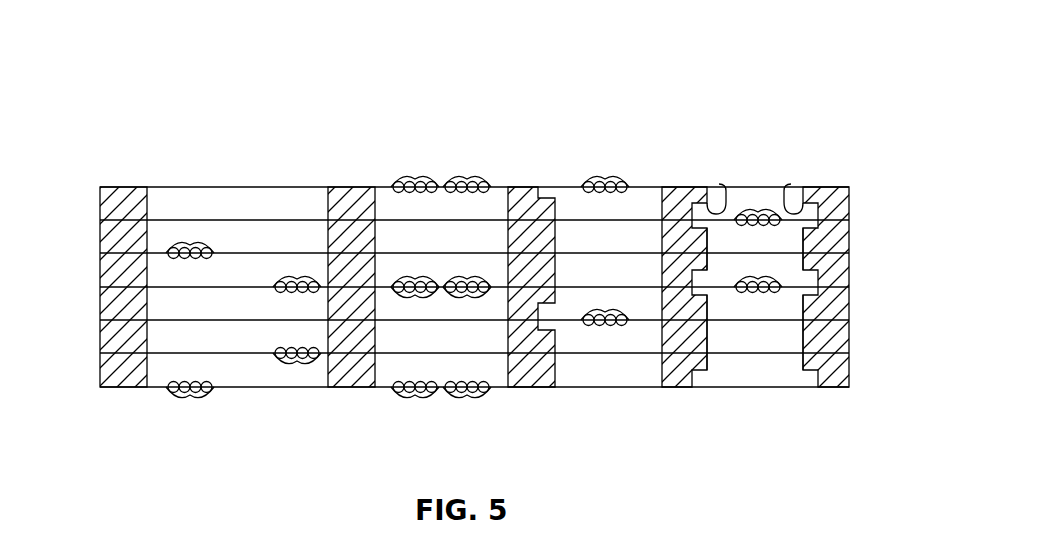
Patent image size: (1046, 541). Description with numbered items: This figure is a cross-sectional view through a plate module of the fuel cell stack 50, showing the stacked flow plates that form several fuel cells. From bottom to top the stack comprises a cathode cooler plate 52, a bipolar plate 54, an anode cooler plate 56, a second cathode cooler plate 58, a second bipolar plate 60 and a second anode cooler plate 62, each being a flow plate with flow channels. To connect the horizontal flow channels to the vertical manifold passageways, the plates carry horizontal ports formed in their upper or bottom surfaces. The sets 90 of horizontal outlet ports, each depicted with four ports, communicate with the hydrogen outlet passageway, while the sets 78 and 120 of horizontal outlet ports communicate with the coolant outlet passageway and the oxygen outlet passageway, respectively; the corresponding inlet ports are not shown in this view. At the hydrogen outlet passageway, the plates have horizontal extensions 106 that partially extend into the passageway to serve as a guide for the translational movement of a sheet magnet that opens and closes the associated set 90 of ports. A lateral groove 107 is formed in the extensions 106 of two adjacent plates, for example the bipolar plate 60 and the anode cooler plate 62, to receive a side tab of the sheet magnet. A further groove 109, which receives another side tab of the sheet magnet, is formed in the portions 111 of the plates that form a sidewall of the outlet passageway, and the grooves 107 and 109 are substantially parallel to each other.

The fuel cell stack 50 is at (725, 82).
The cathode cooler plate 52 is at (449, 381).
The bipolar plate 54 is at (449, 349).
The anode cooler plate 56 is at (449, 316).
The cathode cooler plate 58 is at (449, 283).
The bipolar plate 60 is at (449, 249).
The anode cooler plate 62 is at (449, 208).
The set of horizontal outlet ports 78 is at (439, 295).
The set of horizontal outlet ports 90 is at (631, 214).
The horizontal extension 106 is at (731, 287).
The lateral groove 107 is at (735, 285).
The groove 109 is at (838, 293).
The portions of the plates 111 is at (861, 288).
The set of horizontal outlet ports 120 is at (283, 291).